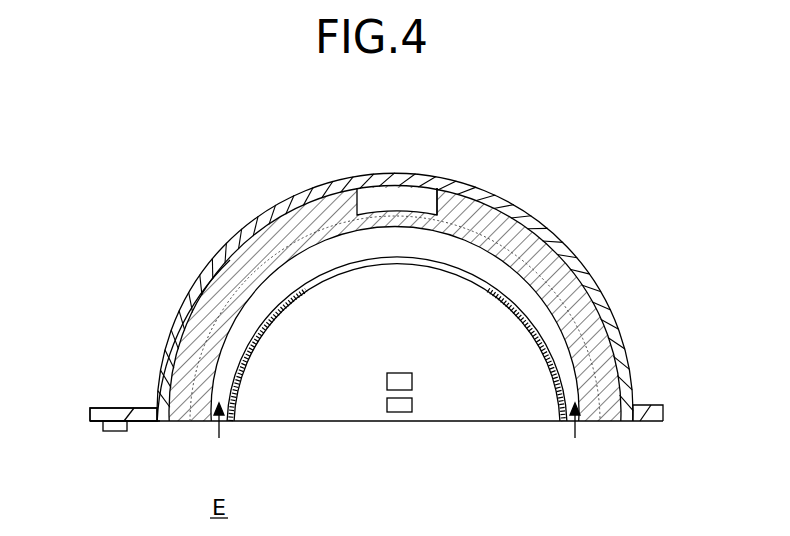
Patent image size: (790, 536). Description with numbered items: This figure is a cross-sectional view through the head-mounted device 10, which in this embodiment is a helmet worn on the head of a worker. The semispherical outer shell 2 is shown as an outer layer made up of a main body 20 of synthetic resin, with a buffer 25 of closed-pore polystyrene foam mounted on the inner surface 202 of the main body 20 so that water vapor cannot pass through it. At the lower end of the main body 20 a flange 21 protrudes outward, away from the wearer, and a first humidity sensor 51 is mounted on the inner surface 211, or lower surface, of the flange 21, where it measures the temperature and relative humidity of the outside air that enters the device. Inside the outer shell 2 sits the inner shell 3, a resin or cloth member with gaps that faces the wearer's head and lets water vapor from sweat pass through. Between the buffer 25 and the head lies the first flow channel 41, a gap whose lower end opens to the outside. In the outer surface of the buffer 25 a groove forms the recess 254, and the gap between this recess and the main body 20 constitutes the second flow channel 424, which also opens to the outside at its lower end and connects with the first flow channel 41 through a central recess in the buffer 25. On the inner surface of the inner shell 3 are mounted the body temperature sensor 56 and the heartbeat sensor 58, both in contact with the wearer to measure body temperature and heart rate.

The head-mounted device 10 is at (624, 170).
The outer shell 2 is at (458, 171).
The main body 20 is at (340, 190).
The inner surface 202 is at (227, 267).
The buffer 25 is at (304, 234).
The second flow channel 424 is at (396, 199).
The recess 254 is at (413, 213).
The first flow channel 41 is at (503, 278).
The inner shell 3 is at (557, 378).
The flange 21 is at (117, 413).
The first humidity sensor 51 is at (113, 433).
The inner surface 211 is at (140, 423).
The body temperature sensor 56 is at (412, 381).
The heartbeat sensor 58 is at (412, 407).